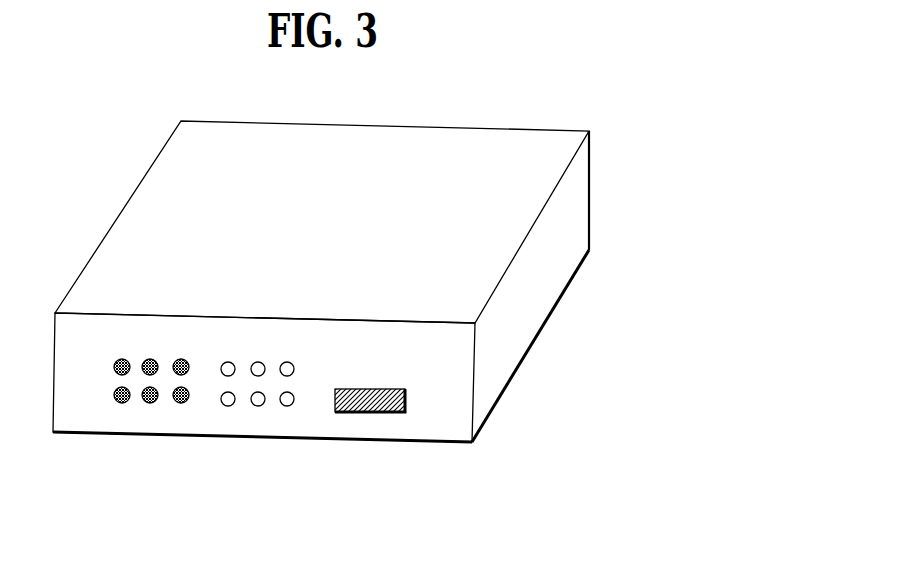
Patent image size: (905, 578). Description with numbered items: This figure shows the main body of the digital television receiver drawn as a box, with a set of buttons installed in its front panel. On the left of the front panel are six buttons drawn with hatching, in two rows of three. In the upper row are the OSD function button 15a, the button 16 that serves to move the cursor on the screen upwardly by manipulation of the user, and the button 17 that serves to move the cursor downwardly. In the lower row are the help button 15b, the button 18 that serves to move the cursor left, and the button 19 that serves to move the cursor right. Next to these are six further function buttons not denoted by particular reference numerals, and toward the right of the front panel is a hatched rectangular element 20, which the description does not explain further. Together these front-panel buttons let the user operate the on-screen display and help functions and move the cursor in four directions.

The OSD function button 15a is at (122, 359).
The help button 15b is at (118, 403).
The button 16 is at (152, 359).
The button 17 is at (182, 359).
The button 18 is at (149, 403).
The button 19 is at (183, 403).
The slot 20 is at (405, 401).